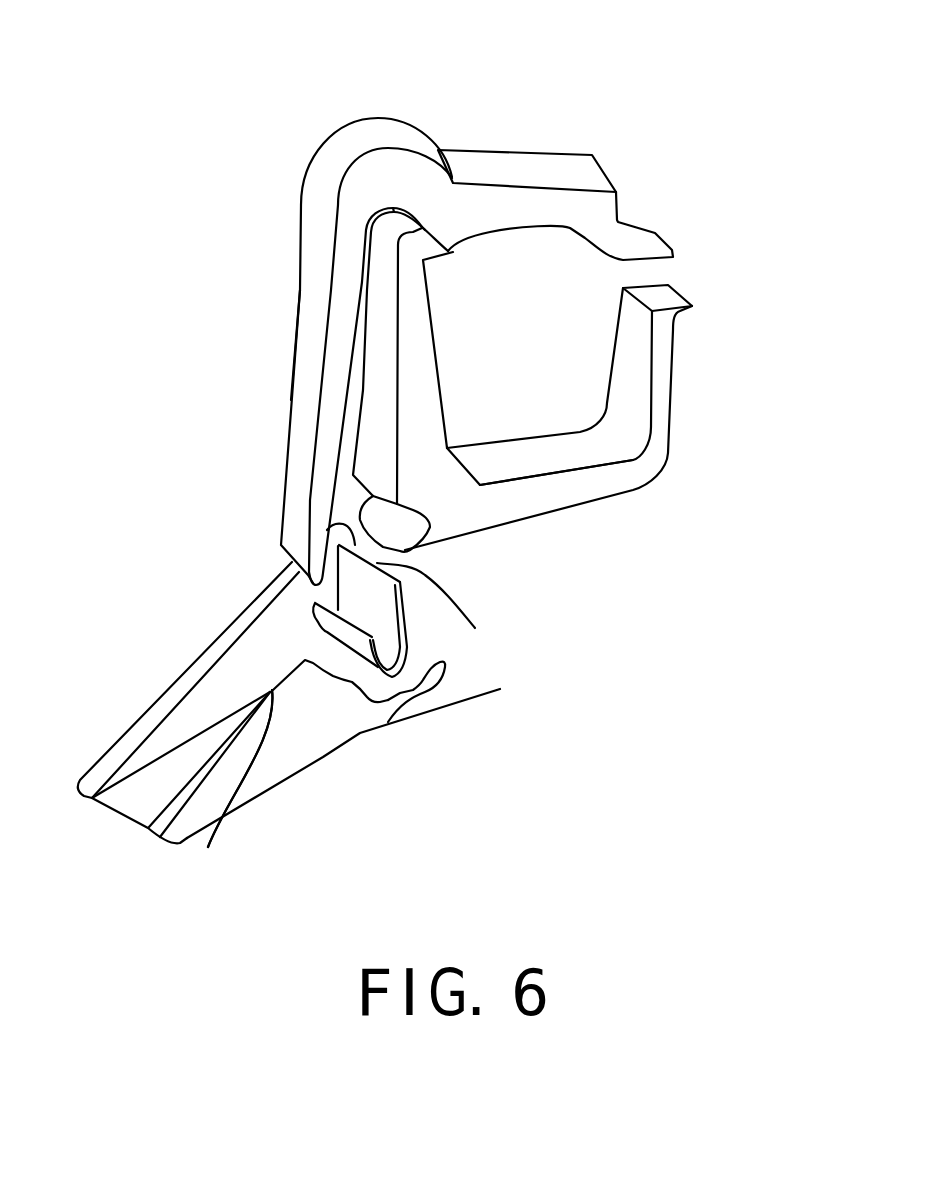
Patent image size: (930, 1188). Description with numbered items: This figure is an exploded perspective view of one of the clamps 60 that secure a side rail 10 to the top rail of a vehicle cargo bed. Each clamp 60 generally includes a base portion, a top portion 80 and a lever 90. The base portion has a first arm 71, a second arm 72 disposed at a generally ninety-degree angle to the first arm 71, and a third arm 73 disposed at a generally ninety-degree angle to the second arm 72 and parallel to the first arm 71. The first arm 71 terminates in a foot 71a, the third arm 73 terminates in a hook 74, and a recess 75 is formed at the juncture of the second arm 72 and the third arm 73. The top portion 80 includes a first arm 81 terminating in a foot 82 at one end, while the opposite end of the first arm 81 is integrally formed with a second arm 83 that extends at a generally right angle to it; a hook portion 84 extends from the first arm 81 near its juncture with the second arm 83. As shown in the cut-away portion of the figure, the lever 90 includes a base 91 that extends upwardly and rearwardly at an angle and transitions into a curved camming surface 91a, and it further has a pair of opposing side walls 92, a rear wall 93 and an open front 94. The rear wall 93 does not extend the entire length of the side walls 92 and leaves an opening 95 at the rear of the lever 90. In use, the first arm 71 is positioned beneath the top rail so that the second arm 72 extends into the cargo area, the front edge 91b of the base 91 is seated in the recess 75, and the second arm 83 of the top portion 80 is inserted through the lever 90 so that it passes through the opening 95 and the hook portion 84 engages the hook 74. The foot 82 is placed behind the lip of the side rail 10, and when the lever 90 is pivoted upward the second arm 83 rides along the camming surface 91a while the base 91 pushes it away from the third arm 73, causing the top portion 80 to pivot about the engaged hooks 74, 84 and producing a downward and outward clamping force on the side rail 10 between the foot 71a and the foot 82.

The side rail 10 is at (652, 500).
The clamp 60 is at (273, 113).
The first arm 71 is at (660, 396).
The foot 71a is at (677, 313).
The second arm 72 is at (557, 502).
The third arm 73 is at (403, 392).
The hook 74 is at (420, 243).
The recess 75 is at (415, 527).
The top portion 80 is at (387, 95).
The first arm 81 is at (602, 208).
The foot 82 is at (652, 245).
The second arm 83 is at (293, 490).
The hook portion 84 is at (448, 252).
The lever 90 is at (282, 828).
The base 91 is at (407, 633).
The curved camming surface 91a is at (354, 643).
The front edge 91b is at (405, 570).
The side walls 92 is at (185, 695).
The rear wall 93 is at (137, 803).
The open front 94 is at (243, 645).
The opening 95 is at (208, 847).